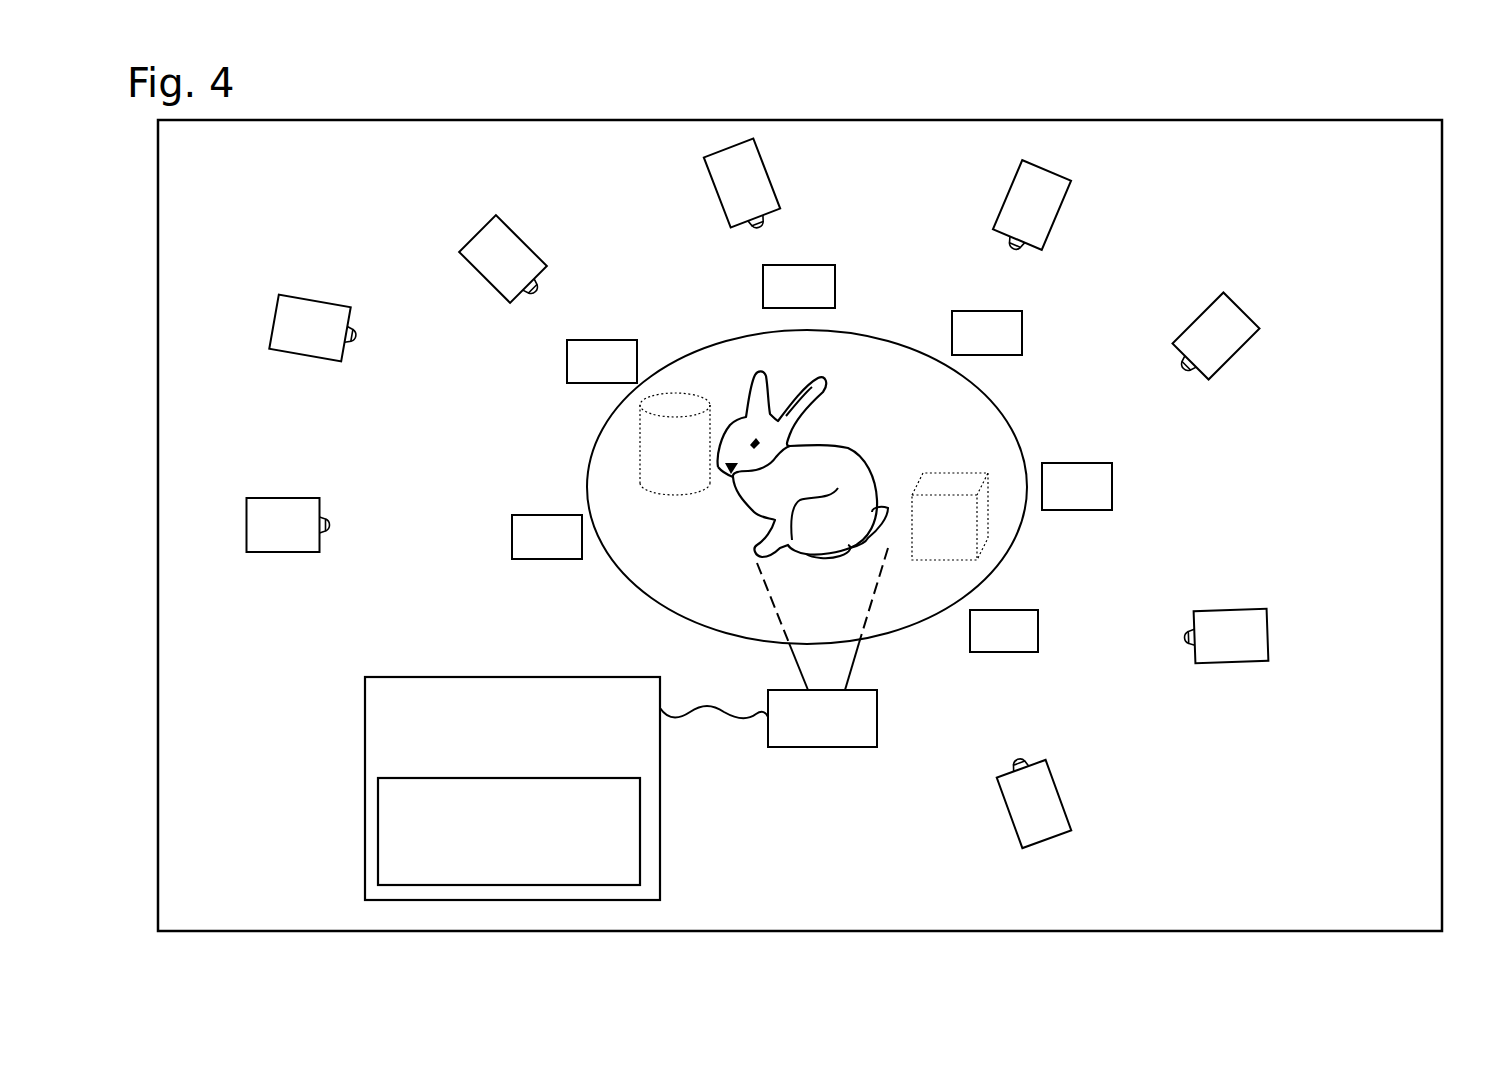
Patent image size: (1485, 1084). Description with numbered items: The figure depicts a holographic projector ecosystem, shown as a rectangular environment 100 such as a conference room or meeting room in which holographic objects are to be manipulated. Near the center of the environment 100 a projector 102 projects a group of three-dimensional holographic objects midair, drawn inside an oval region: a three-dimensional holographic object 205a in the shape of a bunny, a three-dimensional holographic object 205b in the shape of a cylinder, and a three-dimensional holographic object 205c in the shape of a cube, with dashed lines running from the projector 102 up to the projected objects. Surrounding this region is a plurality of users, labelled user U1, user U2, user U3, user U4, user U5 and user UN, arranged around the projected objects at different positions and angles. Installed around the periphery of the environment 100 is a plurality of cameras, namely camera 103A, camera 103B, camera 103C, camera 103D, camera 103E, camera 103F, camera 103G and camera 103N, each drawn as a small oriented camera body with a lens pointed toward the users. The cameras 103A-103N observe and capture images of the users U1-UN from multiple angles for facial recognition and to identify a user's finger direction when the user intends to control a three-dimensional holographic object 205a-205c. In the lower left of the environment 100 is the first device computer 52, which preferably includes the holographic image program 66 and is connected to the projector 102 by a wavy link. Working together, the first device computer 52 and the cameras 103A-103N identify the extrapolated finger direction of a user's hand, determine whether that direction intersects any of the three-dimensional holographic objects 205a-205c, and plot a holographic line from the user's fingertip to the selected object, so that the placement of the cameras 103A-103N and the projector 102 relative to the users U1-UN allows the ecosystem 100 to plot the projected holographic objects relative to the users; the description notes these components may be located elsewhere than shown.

The environment 100 is at (380, 119).
The first device computer 52 is at (518, 676).
The holographic image program 66 is at (378, 843).
The projector 102 is at (822, 718).
The camera 103A is at (314, 329).
The camera 103B is at (288, 525).
The camera 103C is at (506, 262).
The camera 103D is at (1032, 799).
The camera 103E is at (1226, 636).
The camera 103F is at (1212, 340).
The camera 103G is at (1030, 209).
The camera 103N is at (744, 187).
The 3D holographic object 205a is at (866, 459).
The 3D holographic object 205b is at (703, 399).
The 3D holographic object 205c is at (972, 482).
The user U1 is at (1004, 631).
The user U2 is at (1077, 486).
The user U3 is at (987, 333).
The user U4 is at (799, 286).
The user U5 is at (602, 361).
The user UN is at (547, 537).